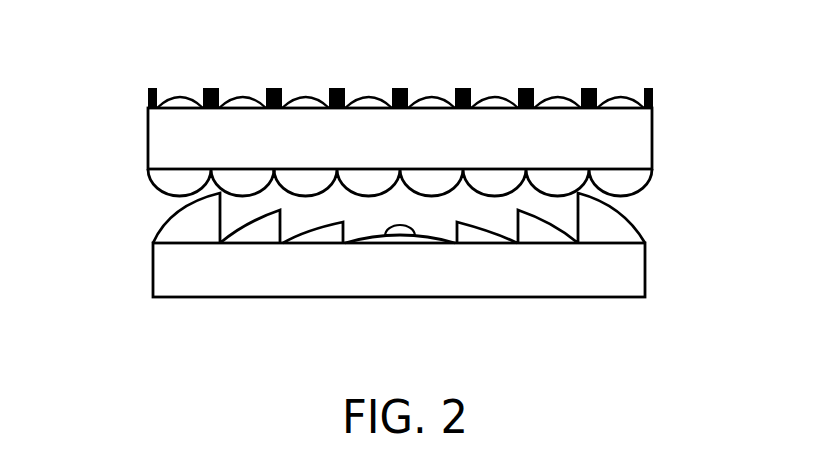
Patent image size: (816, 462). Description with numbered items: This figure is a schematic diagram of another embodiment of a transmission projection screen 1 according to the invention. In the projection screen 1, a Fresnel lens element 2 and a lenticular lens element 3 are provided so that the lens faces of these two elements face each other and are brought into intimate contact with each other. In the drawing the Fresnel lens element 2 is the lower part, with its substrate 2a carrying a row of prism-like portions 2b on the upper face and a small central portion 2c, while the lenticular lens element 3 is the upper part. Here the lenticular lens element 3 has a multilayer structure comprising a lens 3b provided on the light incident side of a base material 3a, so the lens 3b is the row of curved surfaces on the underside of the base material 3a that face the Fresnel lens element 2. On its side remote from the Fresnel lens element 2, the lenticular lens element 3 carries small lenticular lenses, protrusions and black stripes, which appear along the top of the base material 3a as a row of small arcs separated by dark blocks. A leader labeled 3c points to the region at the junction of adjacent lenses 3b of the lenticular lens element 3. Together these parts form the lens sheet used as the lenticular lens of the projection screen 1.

The transmission projection screen 1 is at (104, 170).
The Fresnel lens element 2 is at (547, 310).
The substrate 2a is at (632, 277).
The prism 2b is at (620, 223).
The light source 2c is at (412, 240).
The lenticular lens element 3 is at (558, 75).
The base material 3a is at (635, 142).
The lens 3b is at (626, 180).
The lens boundary 3c is at (278, 190).